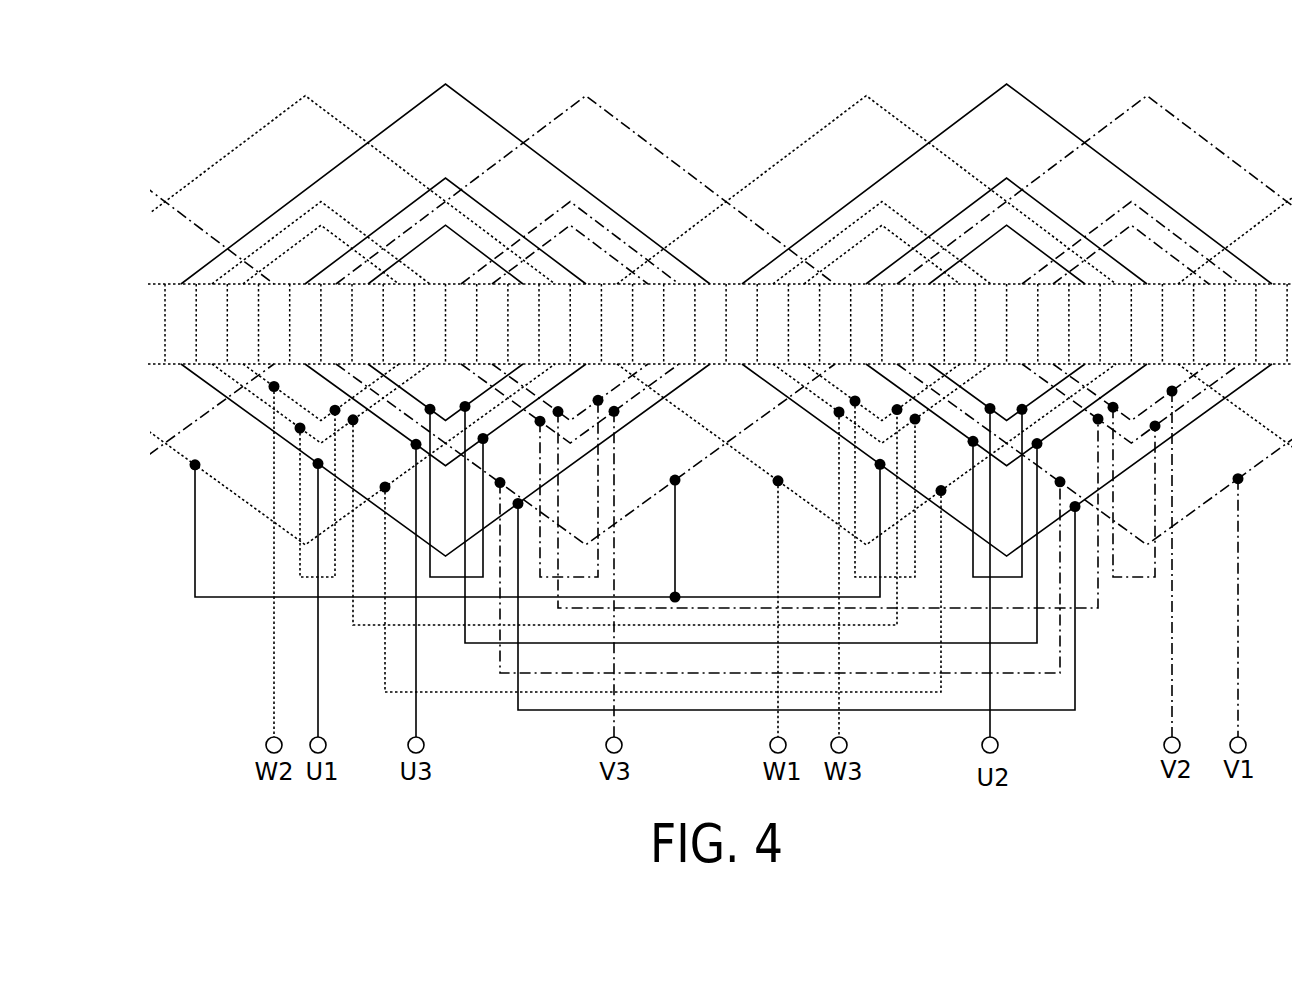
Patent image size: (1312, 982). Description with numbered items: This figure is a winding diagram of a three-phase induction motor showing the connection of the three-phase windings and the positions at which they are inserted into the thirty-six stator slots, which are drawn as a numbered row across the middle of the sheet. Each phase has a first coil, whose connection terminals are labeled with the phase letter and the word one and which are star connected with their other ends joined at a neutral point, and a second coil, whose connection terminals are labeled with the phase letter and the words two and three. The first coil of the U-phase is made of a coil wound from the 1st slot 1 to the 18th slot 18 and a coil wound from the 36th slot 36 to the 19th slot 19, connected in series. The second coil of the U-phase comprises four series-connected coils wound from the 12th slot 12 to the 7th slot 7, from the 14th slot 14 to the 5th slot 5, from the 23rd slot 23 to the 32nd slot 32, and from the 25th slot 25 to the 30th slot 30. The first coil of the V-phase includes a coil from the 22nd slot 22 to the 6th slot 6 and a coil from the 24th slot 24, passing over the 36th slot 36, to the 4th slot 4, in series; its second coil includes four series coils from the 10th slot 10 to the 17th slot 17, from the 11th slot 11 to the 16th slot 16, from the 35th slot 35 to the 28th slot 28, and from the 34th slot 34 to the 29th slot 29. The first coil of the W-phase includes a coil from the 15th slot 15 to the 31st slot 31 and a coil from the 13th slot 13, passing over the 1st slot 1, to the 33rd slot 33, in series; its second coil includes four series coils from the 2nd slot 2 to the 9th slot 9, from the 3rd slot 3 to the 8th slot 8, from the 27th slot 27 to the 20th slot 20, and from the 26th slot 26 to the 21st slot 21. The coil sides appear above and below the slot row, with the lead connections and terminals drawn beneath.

The 1st slot 1 is at (176, 324).
The 2nd slot 2 is at (207, 324).
The 3rd slot 3 is at (238, 324).
The 4th slot 4 is at (270, 324).
The 5th slot 5 is at (301, 324).
The 6th slot 6 is at (332, 324).
The 7th slot 7 is at (363, 324).
The 8th slot 8 is at (394, 324).
The 9th slot 9 is at (425, 324).
The 10th slot 10 is at (461, 324).
The 11th slot 11 is at (492, 324).
The 12th slot 12 is at (523, 324).
The 13th slot 13 is at (554, 324).
The 14th slot 14 is at (585, 324).
The 15th slot 15 is at (616, 324).
The 16th slot 16 is at (648, 324).
The 17th slot 17 is at (679, 324).
The 18th slot 18 is at (710, 324).
The 19th slot 19 is at (741, 324).
The 20th slot 20 is at (772, 324).
The 21st slot 21 is at (803, 324).
The 22nd slot 22 is at (835, 324).
The 23rd slot 23 is at (866, 324).
The 24th slot 24 is at (897, 324).
The 25th slot 25 is at (928, 324).
The 26th slot 26 is at (959, 324).
The 27th slot 27 is at (990, 324).
The 28th slot 28 is at (1022, 324).
The 29th slot 29 is at (1053, 324).
The 30th slot 30 is at (1084, 324).
The 31st slot 31 is at (1115, 324).
The 32nd slot 32 is at (1146, 324).
The 33rd slot 33 is at (1177, 324).
The 34th slot 34 is at (1209, 324).
The 35th slot 35 is at (1240, 324).
The 36th slot 36 is at (1271, 324).